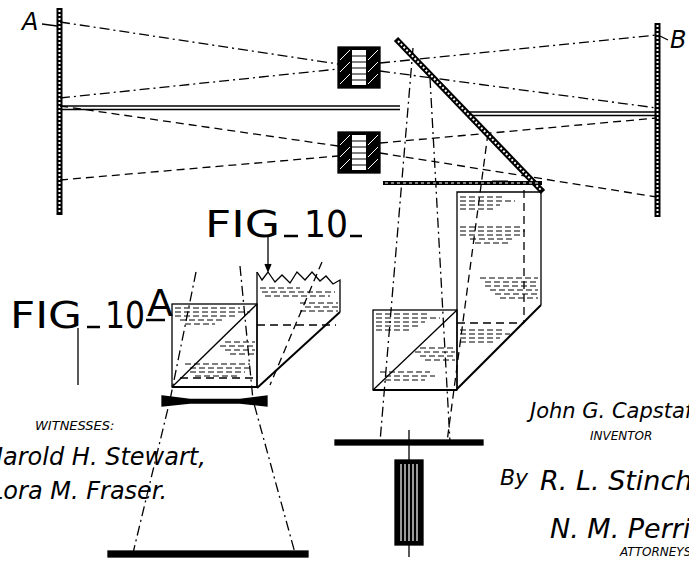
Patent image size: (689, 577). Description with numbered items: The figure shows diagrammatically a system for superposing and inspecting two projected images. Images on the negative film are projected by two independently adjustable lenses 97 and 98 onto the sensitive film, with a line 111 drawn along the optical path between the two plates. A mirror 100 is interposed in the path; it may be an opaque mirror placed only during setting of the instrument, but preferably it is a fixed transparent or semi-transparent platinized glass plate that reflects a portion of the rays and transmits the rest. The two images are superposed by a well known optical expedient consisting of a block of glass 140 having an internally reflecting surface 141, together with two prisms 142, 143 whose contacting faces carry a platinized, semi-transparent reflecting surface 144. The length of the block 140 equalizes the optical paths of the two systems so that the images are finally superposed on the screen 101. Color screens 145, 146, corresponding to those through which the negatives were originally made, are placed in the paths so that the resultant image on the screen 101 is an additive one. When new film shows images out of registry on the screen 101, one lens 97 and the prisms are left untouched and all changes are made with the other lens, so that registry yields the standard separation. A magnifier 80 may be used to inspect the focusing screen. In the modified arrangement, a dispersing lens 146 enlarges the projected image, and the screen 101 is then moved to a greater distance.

In FIG. 10, the lens 97 is at (374, 36).
In FIG. 10, the lens 98 is at (338, 173).
In FIG. 10, the mirror 100 is at (410, 47).
In FIG. 10, the optical axis line / partition 111 is at (270, 106).
In FIG. 10, the color screen 145 is at (393, 186).
In FIG. 10, the color screen 146 is at (500, 183).
In FIG. 10A, the color screen 146 is at (268, 401).
In FIG. 10, the block of glass 140 is at (541, 243).
In FIG. 10A, the block of glass 140 is at (320, 283).
In FIG. 10, the internally reflecting surface 141 is at (505, 335).
In FIG. 10A, the internally reflecting surface 141 is at (312, 337).
In FIG. 10, the prism 142 is at (440, 384).
In FIG. 10A, the prism 142 is at (258, 390).
In FIG. 10, the prism 143 is at (432, 311).
In FIG. 10A, the prism 143 is at (232, 298).
In FIG. 10, the semi-transparent reflecting surface 144 is at (375, 388).
In FIG. 10A, the semi-transparent reflecting surface 144 is at (200, 363).
In FIG. 10, the screen 101 is at (372, 440).
In FIG. 10A, the screen 101 is at (295, 551).
In FIG. 10, the magnifier 80 is at (399, 495).